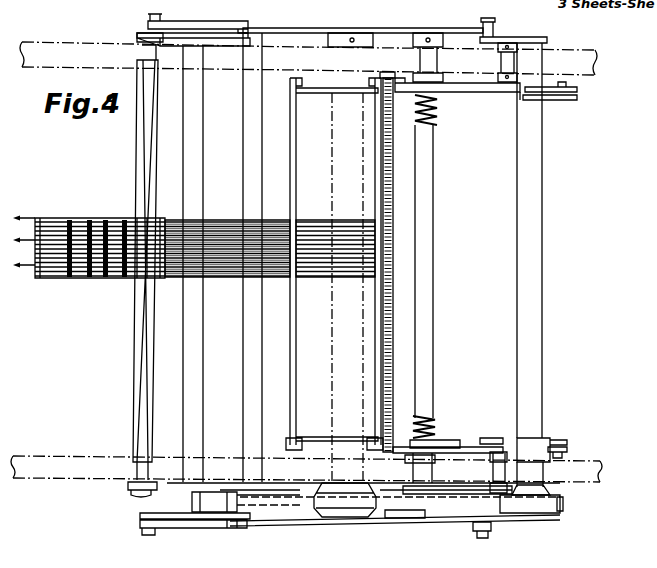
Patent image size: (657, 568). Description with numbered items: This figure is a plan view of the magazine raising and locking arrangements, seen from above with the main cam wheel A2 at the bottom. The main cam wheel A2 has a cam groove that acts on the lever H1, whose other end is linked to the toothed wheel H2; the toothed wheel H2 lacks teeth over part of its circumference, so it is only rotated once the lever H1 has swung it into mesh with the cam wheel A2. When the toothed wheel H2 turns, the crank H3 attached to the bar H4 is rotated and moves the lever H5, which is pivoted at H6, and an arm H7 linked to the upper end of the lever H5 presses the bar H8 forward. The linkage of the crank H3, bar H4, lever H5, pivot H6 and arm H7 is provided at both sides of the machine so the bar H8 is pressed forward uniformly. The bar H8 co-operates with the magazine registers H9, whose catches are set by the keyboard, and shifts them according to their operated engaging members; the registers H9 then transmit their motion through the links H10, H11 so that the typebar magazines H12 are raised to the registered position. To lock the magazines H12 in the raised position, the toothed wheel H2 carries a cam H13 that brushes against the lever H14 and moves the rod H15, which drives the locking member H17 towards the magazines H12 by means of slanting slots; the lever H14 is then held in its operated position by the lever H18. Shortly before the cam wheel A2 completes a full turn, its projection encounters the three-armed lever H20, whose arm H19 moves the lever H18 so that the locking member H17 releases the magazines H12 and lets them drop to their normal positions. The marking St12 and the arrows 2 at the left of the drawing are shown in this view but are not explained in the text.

The lever H1 is at (473, 494).
The toothed wheel H2 is at (561, 510).
The crank H3 is at (515, 37).
The bar H4 is at (293, 27).
The lever H5 is at (222, 32).
The pivot H6 is at (182, 27).
The arm H7 is at (142, 36).
The bar H8 is at (147, 130).
The magazine register H9 is at (53, 219).
The link H10 is at (227, 280).
The link H11 is at (285, 280).
The typebar magazine H12 is at (312, 218).
The cam H13 is at (490, 438).
The lever H14 is at (567, 101).
The rod H15 is at (390, 72).
The locking member H17 is at (388, 356).
The lever H18 is at (578, 89).
The arm H19 is at (487, 95).
The three-armed lever H20 is at (397, 518).
The main cam wheel A2 is at (358, 503).
The direction arrows 2 is at (22, 240).
The sheet marking St12 is at (612, 563).